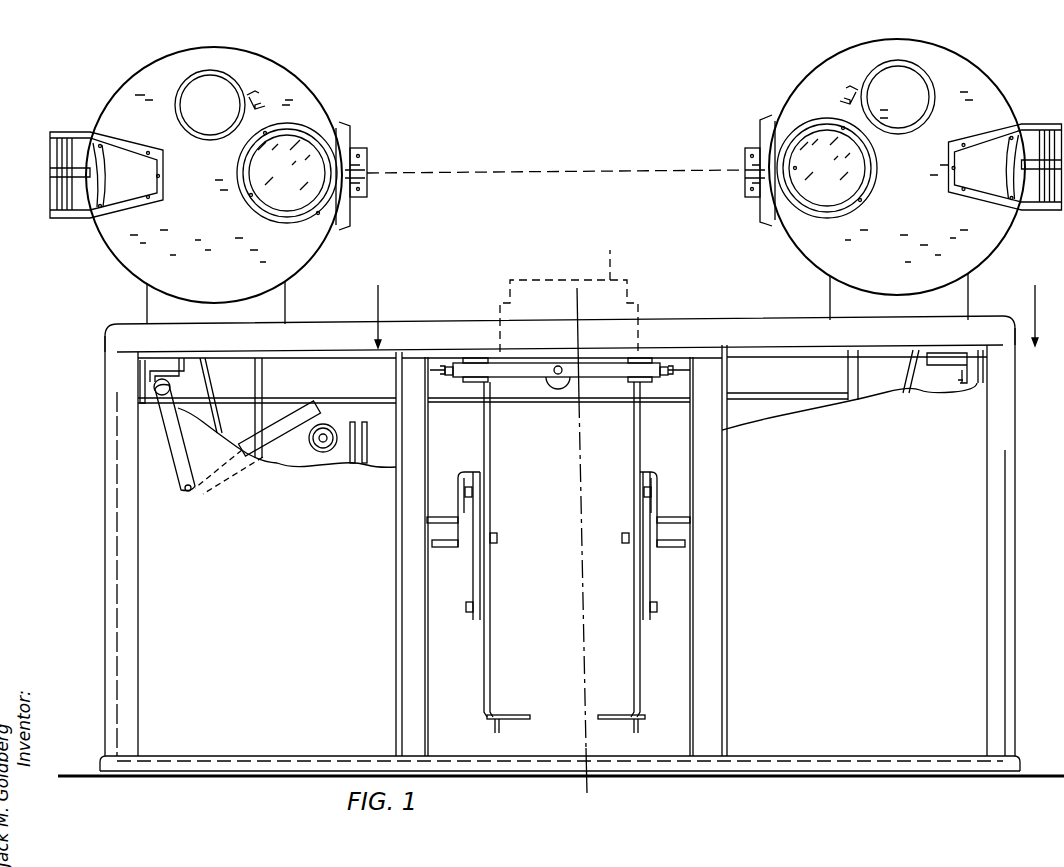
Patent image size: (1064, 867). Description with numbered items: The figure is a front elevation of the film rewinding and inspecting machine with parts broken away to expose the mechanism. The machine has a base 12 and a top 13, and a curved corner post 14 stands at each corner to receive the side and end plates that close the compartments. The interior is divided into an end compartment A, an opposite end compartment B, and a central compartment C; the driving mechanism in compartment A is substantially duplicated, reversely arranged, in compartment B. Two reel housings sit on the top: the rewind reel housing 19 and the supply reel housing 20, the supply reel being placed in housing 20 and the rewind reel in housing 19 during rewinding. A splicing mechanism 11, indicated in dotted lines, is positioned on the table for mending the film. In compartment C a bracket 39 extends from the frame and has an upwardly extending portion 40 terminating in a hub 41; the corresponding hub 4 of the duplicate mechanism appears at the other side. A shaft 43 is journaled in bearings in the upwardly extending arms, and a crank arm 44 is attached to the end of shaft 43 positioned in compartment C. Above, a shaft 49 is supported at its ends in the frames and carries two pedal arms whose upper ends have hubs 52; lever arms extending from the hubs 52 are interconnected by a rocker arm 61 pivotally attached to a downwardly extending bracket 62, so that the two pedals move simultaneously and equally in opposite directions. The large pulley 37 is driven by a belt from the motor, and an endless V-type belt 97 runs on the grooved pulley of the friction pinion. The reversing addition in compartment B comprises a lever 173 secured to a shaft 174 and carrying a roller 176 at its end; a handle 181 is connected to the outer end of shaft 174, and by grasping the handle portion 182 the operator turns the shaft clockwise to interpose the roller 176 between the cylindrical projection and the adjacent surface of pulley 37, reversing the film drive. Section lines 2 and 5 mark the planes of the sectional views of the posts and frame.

The supply reel housing 20 is at (314, 242).
The rewind reel housing 19 is at (812, 240).
The top 13 is at (709, 318).
The corner post 14 is at (110, 388).
The base 12 is at (679, 757).
The control unit (phantom) 11 is at (569, 293).
The section line 2 is at (712, 316).
The section line 5 is at (570, 303).
The shaft 49 is at (436, 372).
The hub 52 is at (480, 360).
The downwardly extending bracket 62 is at (557, 362).
The rocker arm 61 is at (598, 365).
The endless V-type belt 97 is at (210, 377).
The handle portion 182 is at (156, 385).
The handle 181 is at (181, 453).
The shaft 174 is at (198, 492).
The lever 173 is at (280, 428).
The roller 176 is at (324, 424).
The large pulley 37 is at (368, 443).
The hub 41 is at (461, 471).
The hook bracket 4 is at (655, 471).
The upwardly extending portion 40 is at (465, 492).
The shaft 43 is at (445, 515).
The bracket 39 is at (440, 548).
The crank arm 44 is at (478, 587).
The compartment A is at (849, 575).
The compartment B is at (258, 583).
The compartment C is at (553, 585).